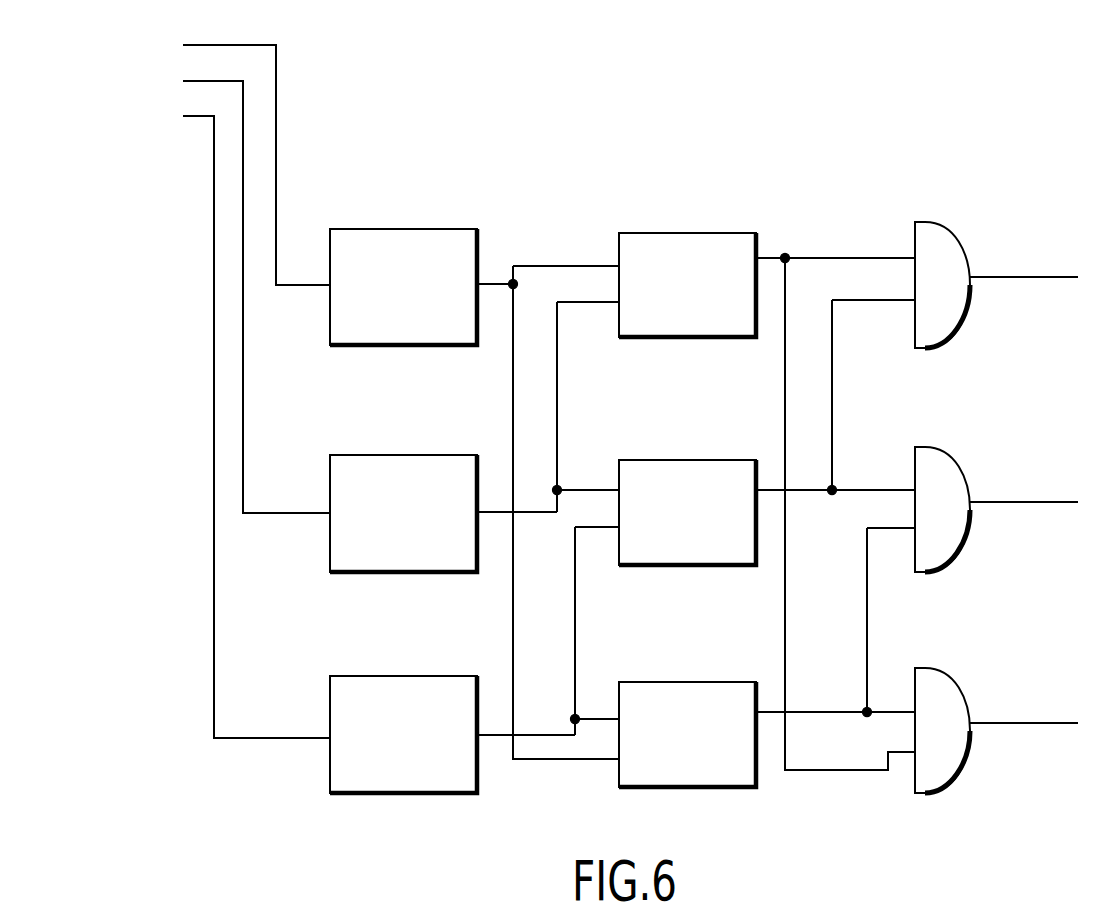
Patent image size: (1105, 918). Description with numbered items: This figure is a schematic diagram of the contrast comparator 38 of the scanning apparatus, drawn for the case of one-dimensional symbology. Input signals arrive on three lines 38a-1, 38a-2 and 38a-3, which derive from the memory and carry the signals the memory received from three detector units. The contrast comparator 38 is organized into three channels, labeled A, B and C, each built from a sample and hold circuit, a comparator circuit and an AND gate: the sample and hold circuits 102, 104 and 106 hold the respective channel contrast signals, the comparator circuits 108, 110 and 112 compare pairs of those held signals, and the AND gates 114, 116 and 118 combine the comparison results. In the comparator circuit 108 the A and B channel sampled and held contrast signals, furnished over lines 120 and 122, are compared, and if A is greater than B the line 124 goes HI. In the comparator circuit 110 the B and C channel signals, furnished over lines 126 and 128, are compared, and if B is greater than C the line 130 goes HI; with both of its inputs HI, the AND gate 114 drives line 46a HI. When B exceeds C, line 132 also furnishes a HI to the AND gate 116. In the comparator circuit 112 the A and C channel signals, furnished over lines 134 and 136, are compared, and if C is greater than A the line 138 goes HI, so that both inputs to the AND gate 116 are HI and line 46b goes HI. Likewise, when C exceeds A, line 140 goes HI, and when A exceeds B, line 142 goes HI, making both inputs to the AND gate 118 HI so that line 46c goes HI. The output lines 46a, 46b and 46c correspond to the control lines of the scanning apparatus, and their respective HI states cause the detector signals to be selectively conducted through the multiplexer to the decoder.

The contrast comparator 38 is at (806, 159).
The input signal line 38a-1 is at (276, 72).
The input signal line 38a-2 is at (243, 130).
The input signal line 38a-3 is at (214, 258).
The sample and hold circuit 102 is at (423, 229).
The sample and hold circuit 104 is at (408, 455).
The sample and hold circuit 106 is at (422, 676).
The comparator circuit 108 is at (672, 233).
The comparator circuit 110 is at (672, 460).
The comparator circuit 112 is at (720, 682).
The AND gate 114 is at (945, 232).
The AND gate 116 is at (947, 455).
The AND gate 118 is at (957, 684).
The line 120 is at (553, 266).
The line 122 is at (557, 385).
The line 124 is at (827, 258).
The line 126 is at (590, 490).
The line 128 is at (575, 612).
The line 130 is at (832, 385).
The line 132 is at (860, 490).
The line 134 is at (590, 719).
The line 136 is at (572, 760).
The line 138 is at (867, 613).
The line 140 is at (823, 712).
The line 142 is at (787, 567).
The control line 46a is at (1052, 278).
The control line 46b is at (1045, 503).
The control line 46c is at (1050, 724).